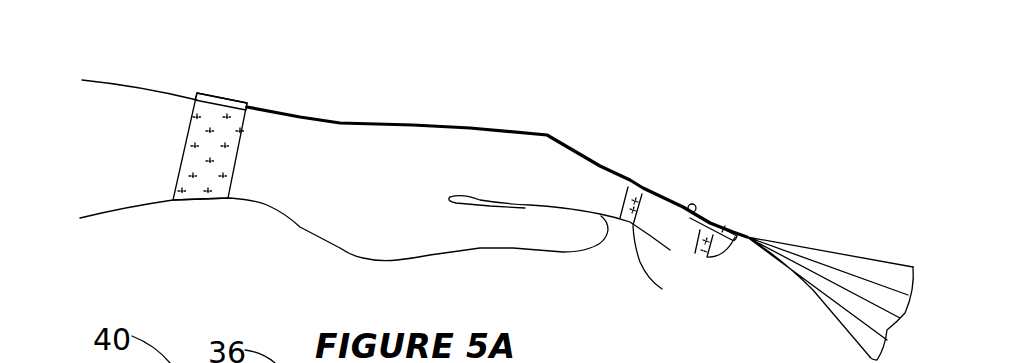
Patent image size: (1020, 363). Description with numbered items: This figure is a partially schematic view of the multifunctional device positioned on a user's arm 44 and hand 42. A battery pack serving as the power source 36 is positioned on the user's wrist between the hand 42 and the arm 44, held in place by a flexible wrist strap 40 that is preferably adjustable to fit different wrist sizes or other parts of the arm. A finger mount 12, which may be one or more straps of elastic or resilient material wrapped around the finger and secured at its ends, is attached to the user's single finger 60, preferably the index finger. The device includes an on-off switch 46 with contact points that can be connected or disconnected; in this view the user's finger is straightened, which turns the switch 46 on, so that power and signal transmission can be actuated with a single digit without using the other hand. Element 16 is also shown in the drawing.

The finger mount 12 is at (697, 253).
The tether strands 16 is at (712, 220).
The power source 36 is at (237, 100).
The wrist strap 40 is at (198, 138).
The hand 42 is at (387, 190).
The arm 44 is at (127, 162).
The on-off switch 46 is at (677, 197).
The finger 60 is at (615, 197).